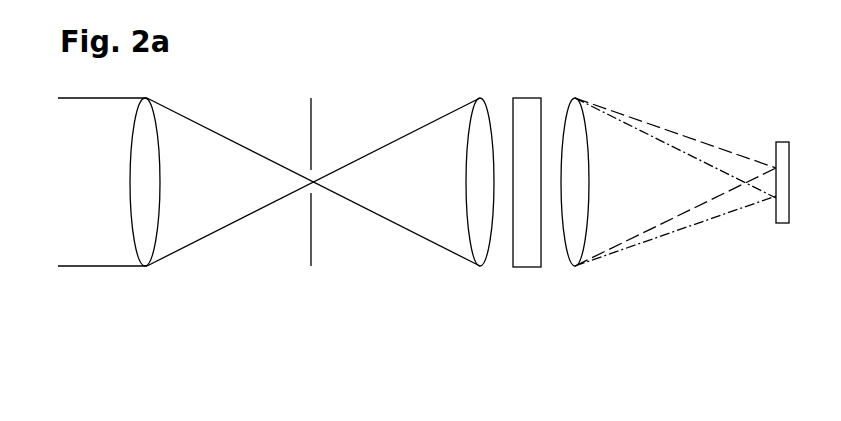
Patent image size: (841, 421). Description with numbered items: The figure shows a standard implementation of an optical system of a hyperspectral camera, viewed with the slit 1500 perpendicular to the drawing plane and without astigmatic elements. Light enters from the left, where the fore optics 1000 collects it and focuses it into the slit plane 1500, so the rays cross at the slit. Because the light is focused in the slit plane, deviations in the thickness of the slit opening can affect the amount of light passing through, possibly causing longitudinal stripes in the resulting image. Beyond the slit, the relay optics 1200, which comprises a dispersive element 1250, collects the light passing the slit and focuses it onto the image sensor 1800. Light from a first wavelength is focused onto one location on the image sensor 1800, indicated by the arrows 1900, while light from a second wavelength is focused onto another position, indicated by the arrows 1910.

The fore optics 1000 is at (117, 206).
The slit 1500 is at (314, 166).
The relay optics 1200 is at (526, 206).
The dispersive element 1250 is at (518, 319).
The arrows indicating second wavelength light 1910 is at (706, 172).
The arrows indicating first wavelength light 1900 is at (658, 174).
The image sensor 1800 is at (778, 161).